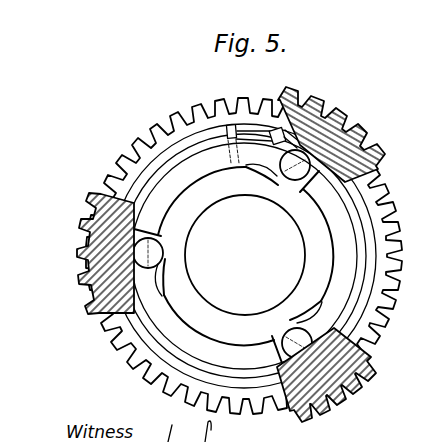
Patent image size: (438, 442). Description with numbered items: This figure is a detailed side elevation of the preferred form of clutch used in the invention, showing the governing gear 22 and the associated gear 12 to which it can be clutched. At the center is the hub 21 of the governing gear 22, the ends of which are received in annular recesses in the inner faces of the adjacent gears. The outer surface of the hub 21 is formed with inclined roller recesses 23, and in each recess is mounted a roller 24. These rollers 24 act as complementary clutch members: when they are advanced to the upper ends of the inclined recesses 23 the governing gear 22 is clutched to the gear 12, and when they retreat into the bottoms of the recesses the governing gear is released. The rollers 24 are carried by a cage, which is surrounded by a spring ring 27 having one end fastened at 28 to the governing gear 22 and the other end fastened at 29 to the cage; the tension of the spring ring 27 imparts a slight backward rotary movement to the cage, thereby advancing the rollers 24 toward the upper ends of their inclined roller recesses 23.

The gear 12 is at (88, 203).
The hub 21 is at (273, 309).
The governing gear 22 is at (154, 140).
The inclined roller recesses 23 is at (256, 165).
The roller 24 is at (286, 157).
The spring ring 27 is at (188, 143).
The fastening of spring ring to governing gear 28 is at (281, 128).
The fastening of spring ring to cage 29 is at (232, 125).